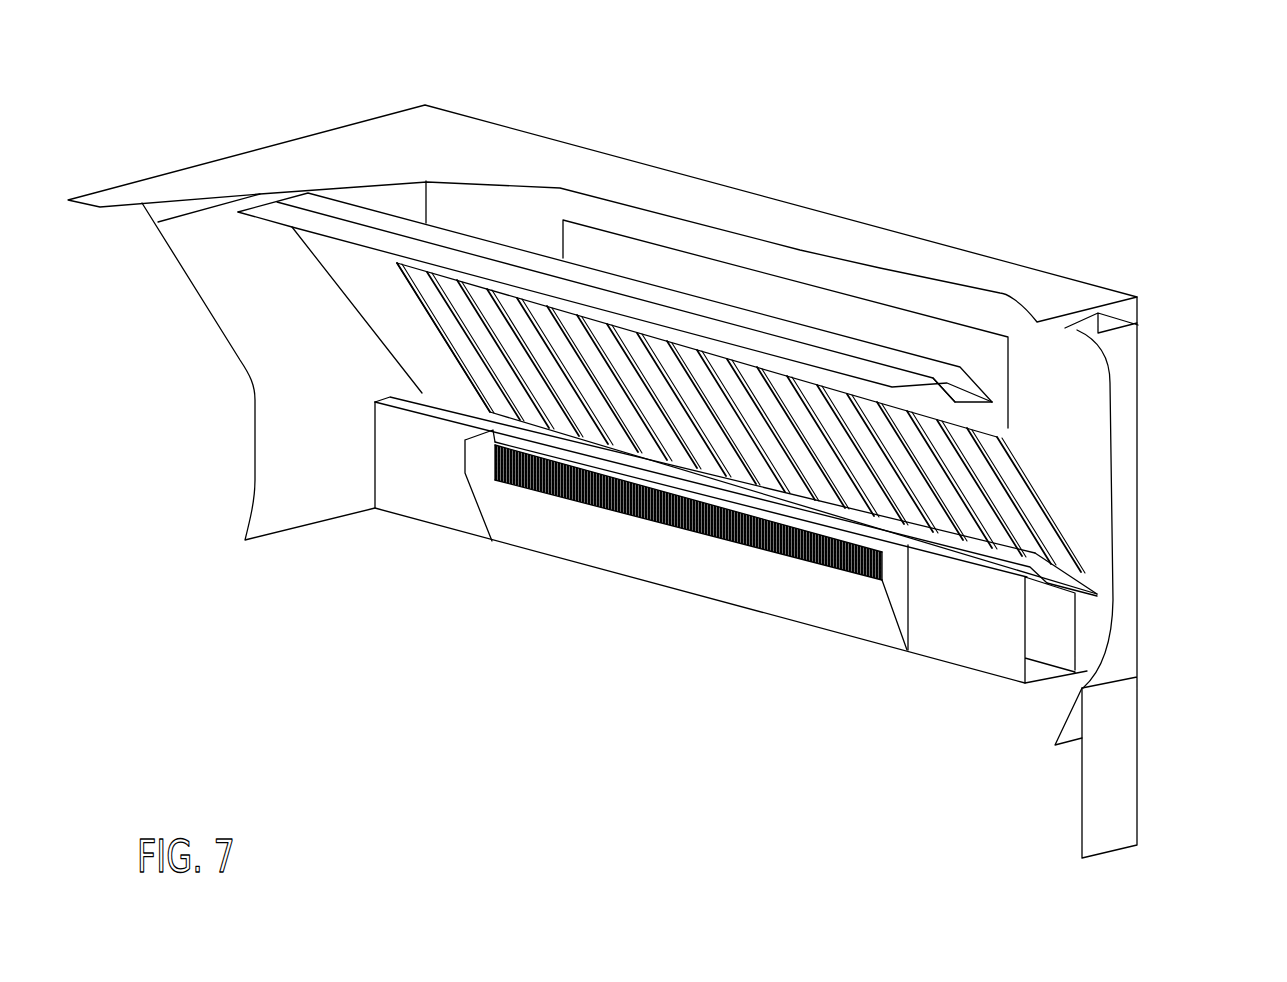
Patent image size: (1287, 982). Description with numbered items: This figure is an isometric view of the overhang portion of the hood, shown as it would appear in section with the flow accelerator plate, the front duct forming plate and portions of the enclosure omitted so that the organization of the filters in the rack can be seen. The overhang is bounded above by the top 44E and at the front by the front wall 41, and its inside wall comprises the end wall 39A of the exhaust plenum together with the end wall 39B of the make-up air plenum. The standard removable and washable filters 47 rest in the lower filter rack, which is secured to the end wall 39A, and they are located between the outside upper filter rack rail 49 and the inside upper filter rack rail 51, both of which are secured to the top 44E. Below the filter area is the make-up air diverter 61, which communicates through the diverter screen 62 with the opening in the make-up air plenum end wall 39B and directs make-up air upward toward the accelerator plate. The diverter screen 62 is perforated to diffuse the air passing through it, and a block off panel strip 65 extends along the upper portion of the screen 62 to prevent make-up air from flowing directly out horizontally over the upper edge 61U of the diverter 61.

The top 44E is at (403, 150).
The end wall of the exhaust plenum 39A is at (525, 215).
The outside upper filter rack rail 49 is at (707, 325).
The inside upper filter rack rail 51 is at (897, 355).
The block off panel strip 65 is at (753, 510).
The filters 47 is at (815, 425).
The make-up air diverter 61 is at (795, 592).
The upper edge of diverter 61U is at (749, 552).
The diverter screen 62 is at (847, 557).
The end wall of the make-up air plenum 39B is at (1090, 650).
The front wall 41 is at (1130, 537).